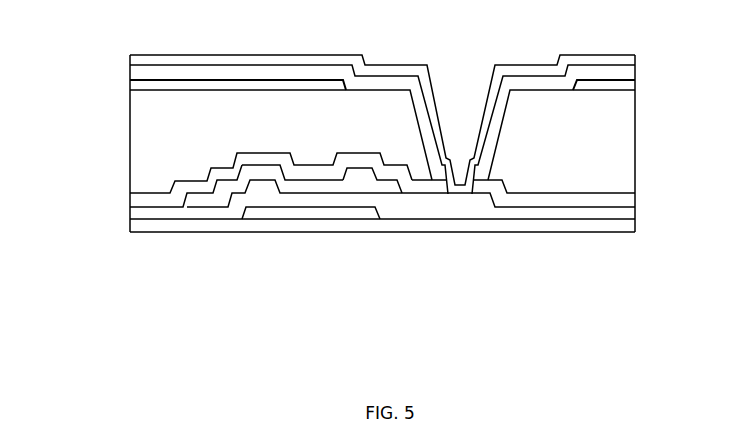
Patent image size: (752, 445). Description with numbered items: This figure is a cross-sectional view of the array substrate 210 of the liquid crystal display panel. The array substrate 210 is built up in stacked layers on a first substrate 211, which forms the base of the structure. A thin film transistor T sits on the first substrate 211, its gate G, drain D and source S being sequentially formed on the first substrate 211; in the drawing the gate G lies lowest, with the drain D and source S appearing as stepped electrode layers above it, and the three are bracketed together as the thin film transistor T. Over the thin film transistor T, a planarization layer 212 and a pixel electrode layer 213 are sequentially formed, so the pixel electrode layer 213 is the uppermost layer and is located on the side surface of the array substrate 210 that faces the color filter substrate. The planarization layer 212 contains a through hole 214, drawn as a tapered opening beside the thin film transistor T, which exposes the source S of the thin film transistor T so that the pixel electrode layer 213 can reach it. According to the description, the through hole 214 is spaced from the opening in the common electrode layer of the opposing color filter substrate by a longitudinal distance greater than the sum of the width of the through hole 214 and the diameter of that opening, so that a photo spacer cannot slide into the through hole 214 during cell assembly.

The array substrate 210 is at (100, 55).
The first substrate 211 is at (580, 232).
The planarization layer 212 is at (626, 163).
The pixel electrode layer 213 is at (618, 53).
The through hole 214 is at (459, 86).
The thin film transistor T is at (382, 235).
The drain D is at (258, 176).
The gate G is at (395, 280).
The source S is at (373, 181).